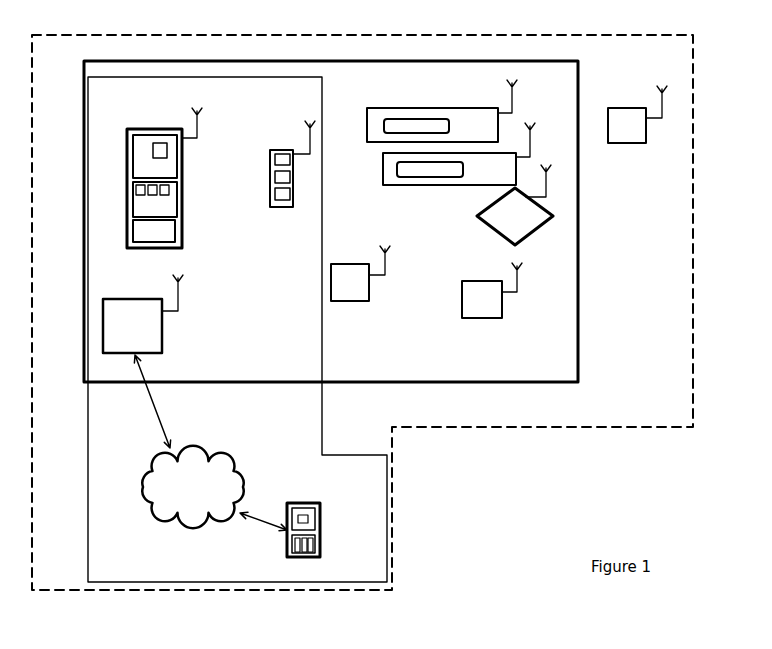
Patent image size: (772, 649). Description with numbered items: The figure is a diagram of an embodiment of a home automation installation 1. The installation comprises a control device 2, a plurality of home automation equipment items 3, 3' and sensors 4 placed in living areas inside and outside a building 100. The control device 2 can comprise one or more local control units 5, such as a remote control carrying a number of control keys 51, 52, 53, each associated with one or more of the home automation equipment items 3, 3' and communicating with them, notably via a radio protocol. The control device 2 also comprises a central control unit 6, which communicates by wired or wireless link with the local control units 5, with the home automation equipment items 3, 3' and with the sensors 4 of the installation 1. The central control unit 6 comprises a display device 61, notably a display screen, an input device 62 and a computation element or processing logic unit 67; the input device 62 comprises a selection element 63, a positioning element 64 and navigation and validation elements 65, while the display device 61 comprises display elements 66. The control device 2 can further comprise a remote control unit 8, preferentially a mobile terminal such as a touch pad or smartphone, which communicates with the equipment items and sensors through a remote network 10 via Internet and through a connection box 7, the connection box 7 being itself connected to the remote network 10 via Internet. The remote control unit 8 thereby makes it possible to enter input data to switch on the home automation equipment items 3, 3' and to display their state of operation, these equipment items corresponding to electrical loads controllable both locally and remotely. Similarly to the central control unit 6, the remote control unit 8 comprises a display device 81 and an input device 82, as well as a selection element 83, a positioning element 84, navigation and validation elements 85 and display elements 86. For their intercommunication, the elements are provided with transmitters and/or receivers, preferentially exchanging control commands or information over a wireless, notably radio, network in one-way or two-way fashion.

The home automation installation 1 is at (683, 225).
The building 100 is at (568, 345).
The control device 2 is at (303, 339).
The home automation equipment item 3 is at (435, 132).
The home automation equipment item 3' is at (499, 205).
The sensor 4 is at (625, 135).
The local control unit 5 is at (273, 161).
The control key 51 is at (274, 159).
The control key 52 is at (274, 177).
The control key 53 is at (274, 195).
The central control unit 6 is at (160, 170).
The display device 61 is at (143, 167).
The input device 62 is at (142, 205).
The selection element 63 is at (137, 187).
The positioning element 64 is at (152, 195).
The navigation and validation elements 65 is at (170, 192).
The display elements 66 is at (162, 143).
The computation element or processing logic unit 67 is at (130, 227).
The connection box 7 is at (142, 313).
The remote network 10 is at (238, 463).
The remote control unit 8 is at (299, 547).
The display device 81 is at (318, 515).
The input device 82 is at (320, 542).
The selection element 83 is at (287, 545).
The positioning element 84 is at (305, 555).
The navigation and validation elements 85 is at (310, 557).
The display elements 86 is at (300, 515).